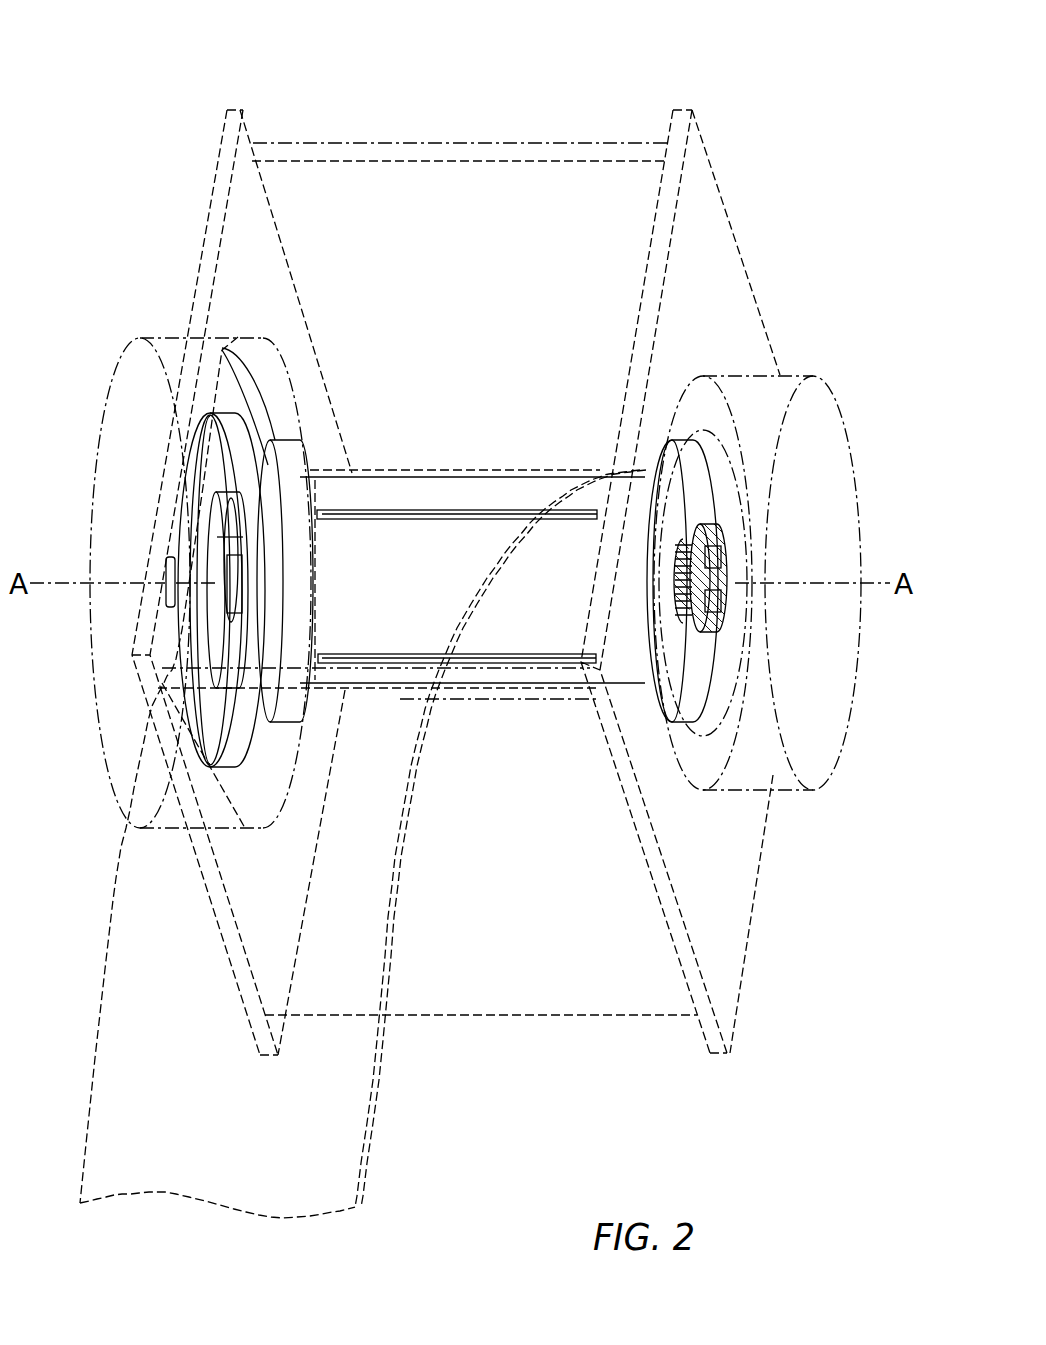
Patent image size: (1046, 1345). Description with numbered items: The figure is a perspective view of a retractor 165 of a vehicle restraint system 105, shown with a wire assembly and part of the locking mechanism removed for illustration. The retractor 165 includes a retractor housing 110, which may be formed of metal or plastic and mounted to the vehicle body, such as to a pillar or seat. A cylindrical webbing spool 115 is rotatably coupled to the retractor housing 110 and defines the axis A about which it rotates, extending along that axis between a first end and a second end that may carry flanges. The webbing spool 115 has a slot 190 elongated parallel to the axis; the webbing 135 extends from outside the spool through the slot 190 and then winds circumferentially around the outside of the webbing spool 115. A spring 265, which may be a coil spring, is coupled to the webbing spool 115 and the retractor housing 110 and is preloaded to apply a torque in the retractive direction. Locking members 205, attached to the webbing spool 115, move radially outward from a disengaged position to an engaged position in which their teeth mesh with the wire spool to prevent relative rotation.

The restraint system 105 is at (600, 56).
The retractor housing 110 is at (730, 213).
The webbing spool 115 is at (311, 470).
The webbing 135 is at (370, 1095).
The retractor 165 is at (198, 176).
The slot 190 is at (472, 509).
The locking member 205 is at (722, 545).
The spring 265 is at (221, 410).